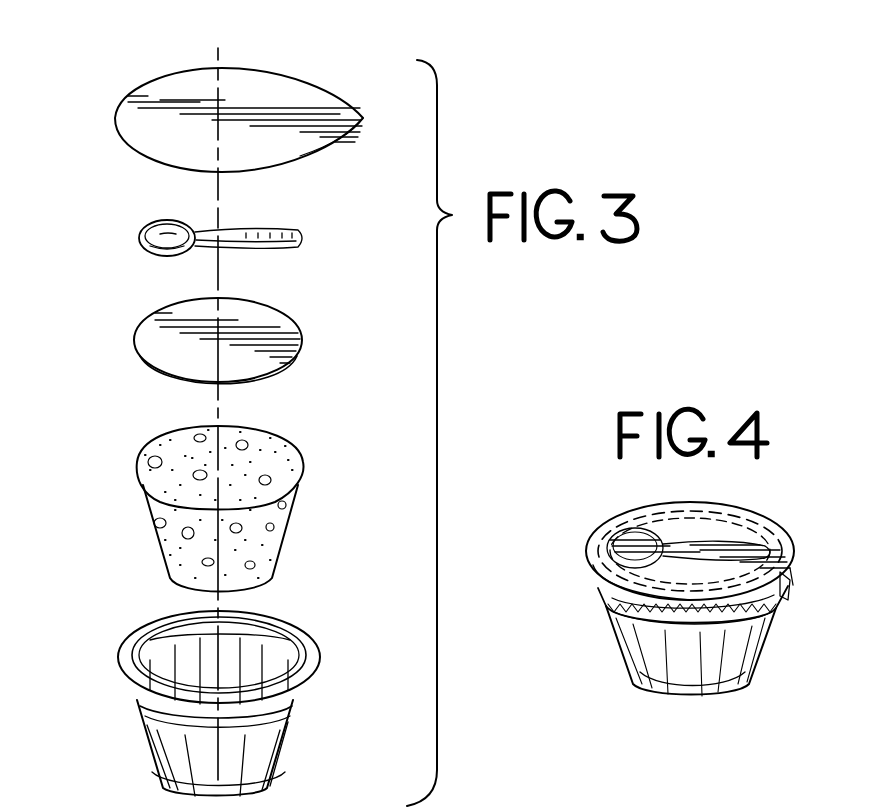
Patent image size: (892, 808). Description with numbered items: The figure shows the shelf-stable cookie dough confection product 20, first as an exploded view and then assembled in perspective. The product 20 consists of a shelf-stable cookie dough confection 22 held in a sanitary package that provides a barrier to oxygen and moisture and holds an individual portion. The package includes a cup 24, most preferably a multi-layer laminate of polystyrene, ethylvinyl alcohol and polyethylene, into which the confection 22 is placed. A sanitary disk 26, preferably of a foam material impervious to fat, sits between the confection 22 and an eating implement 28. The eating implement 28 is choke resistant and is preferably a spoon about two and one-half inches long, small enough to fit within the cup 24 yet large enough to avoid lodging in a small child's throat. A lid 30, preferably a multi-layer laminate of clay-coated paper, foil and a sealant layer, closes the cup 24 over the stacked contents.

In FIG. 3, the shelf-stable cookie dough confection product 20 is at (386, 50).
In FIG. 4, the shelf-stable cookie dough confection product 20 is at (830, 489).
In FIG. 3, the shelf-stable cookie dough confection 22 is at (134, 465).
In FIG. 3, the cup 24 is at (116, 654).
In FIG. 4, the cup 24 is at (755, 655).
In FIG. 3, the sanitary disk 26 is at (134, 332).
In FIG. 3, the eating implement 28 is at (136, 238).
In FIG. 4, the eating implement 28 is at (625, 560).
In FIG. 3, the lid 30 is at (113, 110).
In FIG. 4, the lid 30 is at (790, 536).